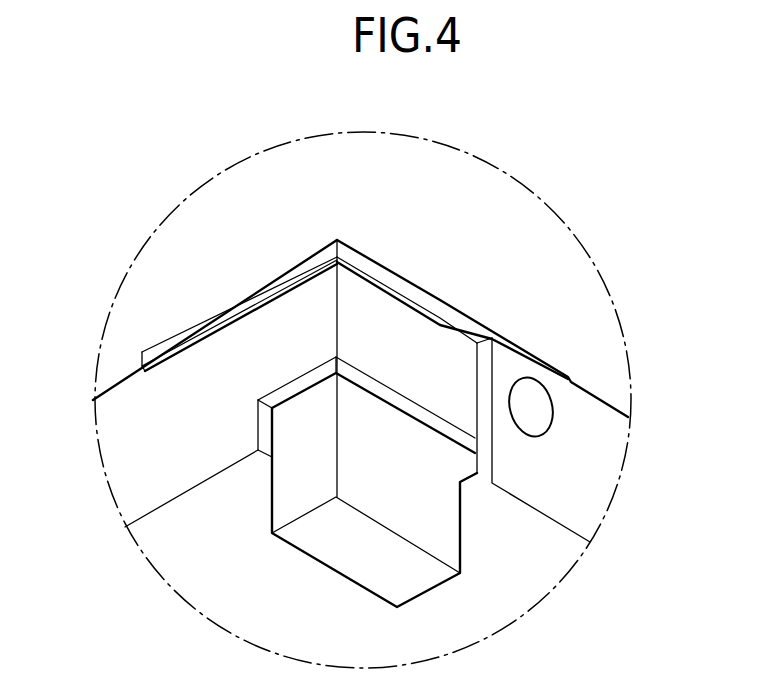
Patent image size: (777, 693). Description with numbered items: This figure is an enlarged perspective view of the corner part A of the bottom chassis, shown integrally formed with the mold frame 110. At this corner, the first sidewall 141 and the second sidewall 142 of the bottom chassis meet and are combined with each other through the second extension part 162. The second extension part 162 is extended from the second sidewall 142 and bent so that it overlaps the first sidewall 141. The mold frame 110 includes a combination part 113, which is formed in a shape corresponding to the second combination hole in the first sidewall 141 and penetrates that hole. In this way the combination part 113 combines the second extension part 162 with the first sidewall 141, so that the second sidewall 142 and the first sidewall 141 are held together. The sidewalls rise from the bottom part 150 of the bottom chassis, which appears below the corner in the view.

The mold frame 110 is at (238, 310).
The second extension part 162 is at (406, 328).
The second sidewall 142 is at (125, 417).
The first sidewall 141 is at (590, 497).
The combination part 113 is at (545, 418).
The bottom part 150 is at (550, 568).
The corner part A is at (631, 379).